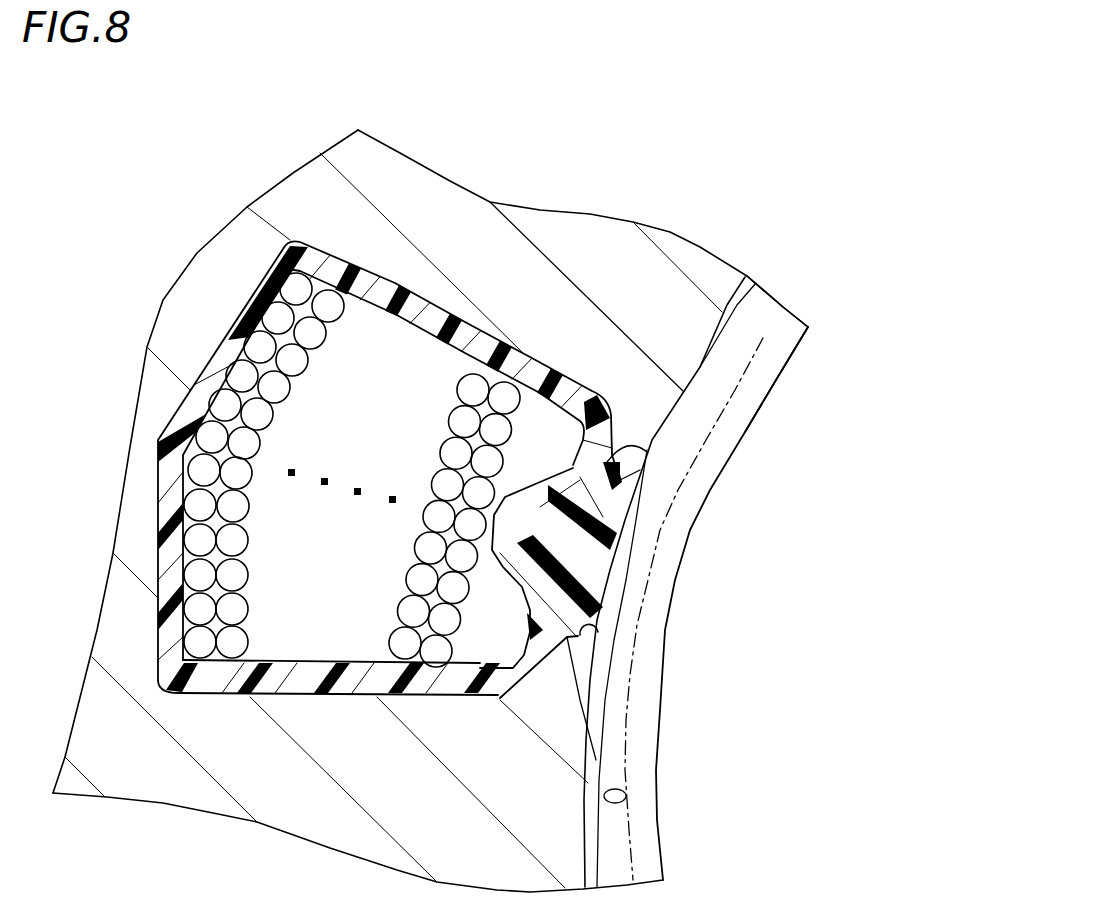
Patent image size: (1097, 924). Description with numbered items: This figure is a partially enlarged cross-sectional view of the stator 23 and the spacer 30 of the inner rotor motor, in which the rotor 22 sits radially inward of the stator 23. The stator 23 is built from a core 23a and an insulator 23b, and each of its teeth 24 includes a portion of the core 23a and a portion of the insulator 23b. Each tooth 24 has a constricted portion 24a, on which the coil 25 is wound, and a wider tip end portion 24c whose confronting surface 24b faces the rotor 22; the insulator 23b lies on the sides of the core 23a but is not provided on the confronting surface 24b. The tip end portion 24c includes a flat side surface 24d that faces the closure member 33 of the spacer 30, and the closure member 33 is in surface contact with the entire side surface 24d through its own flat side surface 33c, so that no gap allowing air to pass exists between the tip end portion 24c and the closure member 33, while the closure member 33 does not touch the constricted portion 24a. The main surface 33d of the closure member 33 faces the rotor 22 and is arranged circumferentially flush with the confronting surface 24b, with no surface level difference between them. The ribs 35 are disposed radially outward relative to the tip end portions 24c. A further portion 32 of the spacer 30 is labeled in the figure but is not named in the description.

The rotor 22 is at (627, 798).
The stator 23 is at (288, 168).
The core 23a is at (343, 205).
The insulator 23b is at (362, 282).
The teeth 24 is at (632, 264).
The constricted portion 24a is at (445, 208).
The confronting surface 24b is at (697, 370).
The tip end portion 24c is at (657, 402).
The side surface 24d is at (637, 523).
The coils 25 is at (276, 316).
The spacer 30 is at (803, 352).
The cover layer 32 is at (763, 390).
The closure member 33 is at (632, 617).
The side surface 33c is at (633, 442).
The main surface 33d is at (613, 568).
The ribs 35 is at (612, 632).